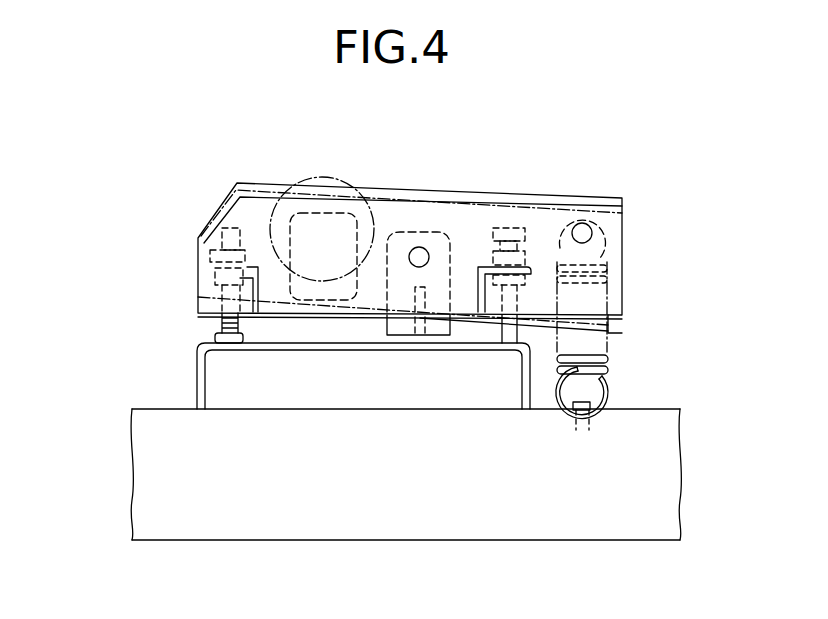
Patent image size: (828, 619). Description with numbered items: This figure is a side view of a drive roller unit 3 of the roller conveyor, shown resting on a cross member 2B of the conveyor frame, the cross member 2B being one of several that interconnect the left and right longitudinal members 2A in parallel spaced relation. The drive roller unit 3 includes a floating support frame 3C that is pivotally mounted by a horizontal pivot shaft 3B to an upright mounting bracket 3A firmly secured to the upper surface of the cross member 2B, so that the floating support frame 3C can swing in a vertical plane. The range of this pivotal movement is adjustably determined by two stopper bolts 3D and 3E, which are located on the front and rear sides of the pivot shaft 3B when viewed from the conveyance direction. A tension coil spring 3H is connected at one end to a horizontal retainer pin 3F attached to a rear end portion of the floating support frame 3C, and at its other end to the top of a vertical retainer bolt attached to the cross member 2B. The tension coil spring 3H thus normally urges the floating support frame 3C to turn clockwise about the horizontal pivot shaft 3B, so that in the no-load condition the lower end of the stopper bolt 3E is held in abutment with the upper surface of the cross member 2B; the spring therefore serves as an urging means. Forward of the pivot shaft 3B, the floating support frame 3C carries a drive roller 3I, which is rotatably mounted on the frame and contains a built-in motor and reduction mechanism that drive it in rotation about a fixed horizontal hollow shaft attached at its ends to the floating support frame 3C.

The longitudinal member 2A is at (405, 512).
The cross member 2B is at (196, 377).
The drive roller unit 3 is at (168, 262).
The upright mounting bracket 3A is at (450, 243).
The horizontal pivot shaft 3B is at (420, 247).
The floating support frame 3C is at (615, 197).
The stopper bolt 3D is at (215, 338).
The stopper bolt 3E is at (513, 230).
The horizontal retainer pin 3F is at (592, 240).
The tension coil spring 3H is at (610, 362).
The drive roller 3I is at (333, 182).